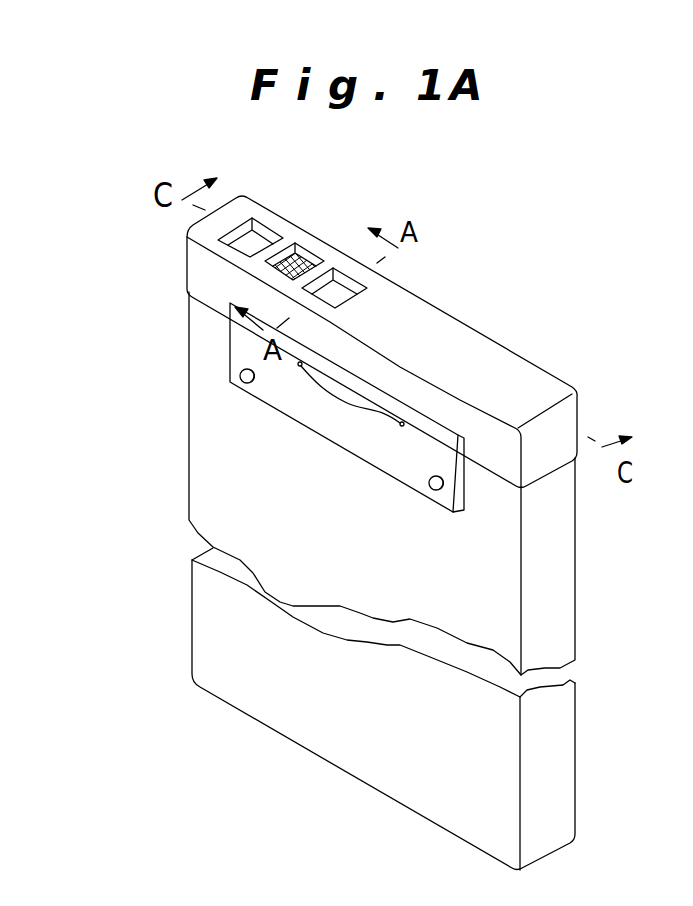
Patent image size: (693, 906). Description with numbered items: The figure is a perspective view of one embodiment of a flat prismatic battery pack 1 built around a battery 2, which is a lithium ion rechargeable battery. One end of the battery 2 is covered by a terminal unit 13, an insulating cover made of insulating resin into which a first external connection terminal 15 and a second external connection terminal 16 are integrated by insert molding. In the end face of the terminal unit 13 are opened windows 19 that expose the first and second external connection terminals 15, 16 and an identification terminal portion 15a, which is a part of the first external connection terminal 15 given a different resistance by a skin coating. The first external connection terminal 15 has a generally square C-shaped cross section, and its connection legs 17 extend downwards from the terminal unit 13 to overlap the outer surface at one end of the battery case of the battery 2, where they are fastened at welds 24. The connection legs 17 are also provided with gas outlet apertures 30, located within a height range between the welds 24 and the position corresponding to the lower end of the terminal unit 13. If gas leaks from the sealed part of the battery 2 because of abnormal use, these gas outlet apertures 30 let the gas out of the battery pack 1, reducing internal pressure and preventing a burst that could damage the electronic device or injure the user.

The battery pack 1 is at (150, 262).
The battery 2 is at (257, 607).
The terminal unit 13 is at (424, 330).
The first external connection terminal 15 is at (185, 297).
The identification terminal portion 15a is at (185, 288).
The second external connection terminal 16 is at (250, 242).
The connection legs 17 is at (253, 350).
The opened windows 19 is at (206, 266).
The welds 24 is at (428, 486).
The gas outlet apertures 30 is at (345, 403).